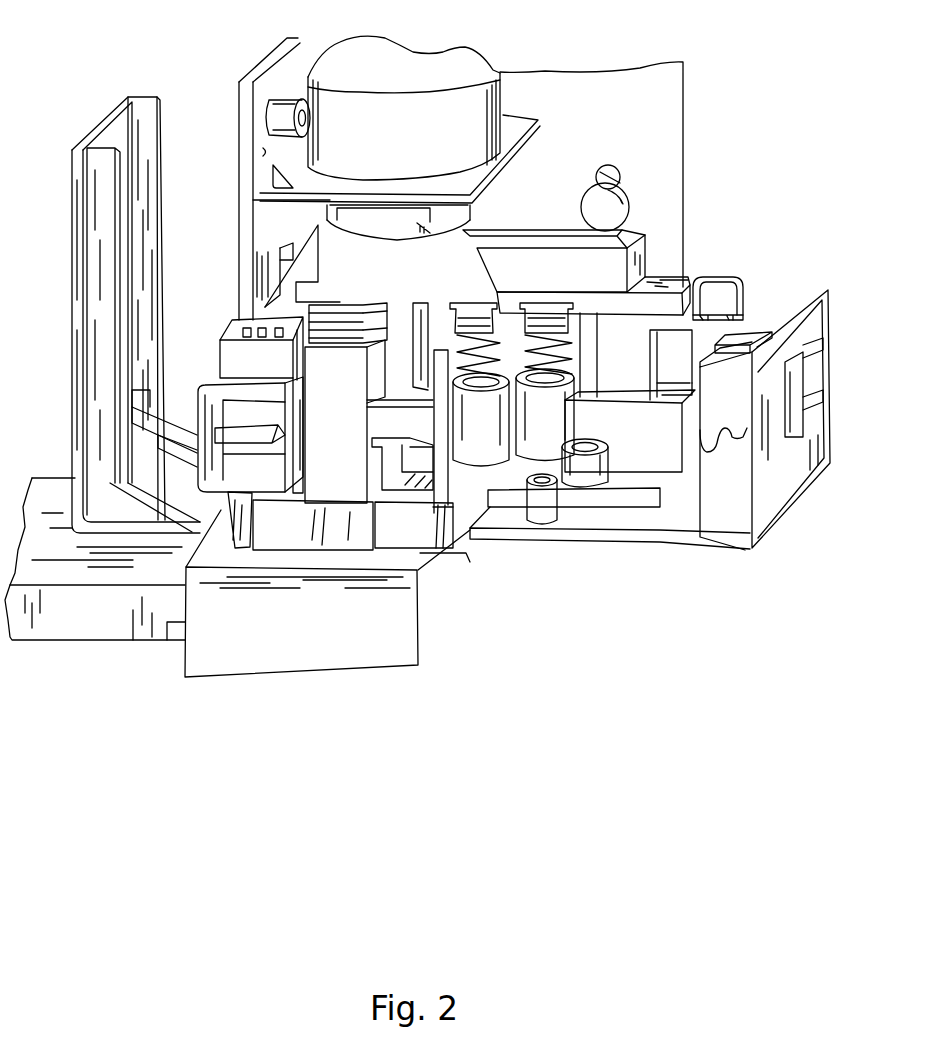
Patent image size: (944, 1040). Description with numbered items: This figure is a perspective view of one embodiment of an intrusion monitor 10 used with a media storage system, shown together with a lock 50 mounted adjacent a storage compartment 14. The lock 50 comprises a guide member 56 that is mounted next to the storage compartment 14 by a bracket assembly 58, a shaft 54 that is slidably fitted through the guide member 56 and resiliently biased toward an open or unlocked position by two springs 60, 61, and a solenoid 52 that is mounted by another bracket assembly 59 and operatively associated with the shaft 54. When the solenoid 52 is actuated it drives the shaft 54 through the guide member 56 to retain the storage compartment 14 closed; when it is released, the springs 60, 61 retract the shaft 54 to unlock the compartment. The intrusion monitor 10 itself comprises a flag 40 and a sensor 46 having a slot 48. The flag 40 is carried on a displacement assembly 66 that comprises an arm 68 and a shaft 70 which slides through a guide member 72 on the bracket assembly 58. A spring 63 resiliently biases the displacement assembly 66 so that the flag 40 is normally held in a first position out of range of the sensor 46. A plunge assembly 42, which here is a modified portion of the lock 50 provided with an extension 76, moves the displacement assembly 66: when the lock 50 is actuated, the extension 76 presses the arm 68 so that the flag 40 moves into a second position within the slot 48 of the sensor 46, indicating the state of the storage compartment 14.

The intrusion monitor 10 is at (720, 88).
The storage compartment 14 is at (72, 640).
The flag 40 is at (742, 278).
The plunge assembly 42 is at (650, 231).
The sensor 46 is at (703, 432).
The slot 48 is at (740, 342).
The lock 50 is at (377, 257).
The solenoid 52 is at (502, 95).
The shaft 54 is at (412, 372).
The guide member 56 is at (365, 385).
The bracket assembly 58 is at (545, 543).
The bracket assembly 59 is at (263, 152).
The spring 60 is at (390, 300).
The spring 61 is at (455, 300).
The spring 63 is at (490, 303).
The displacement assembly 66 is at (678, 284).
The arm 68 is at (635, 315).
The shaft 70 is at (648, 367).
The guide member 72 is at (690, 432).
The extension 76 is at (547, 230).